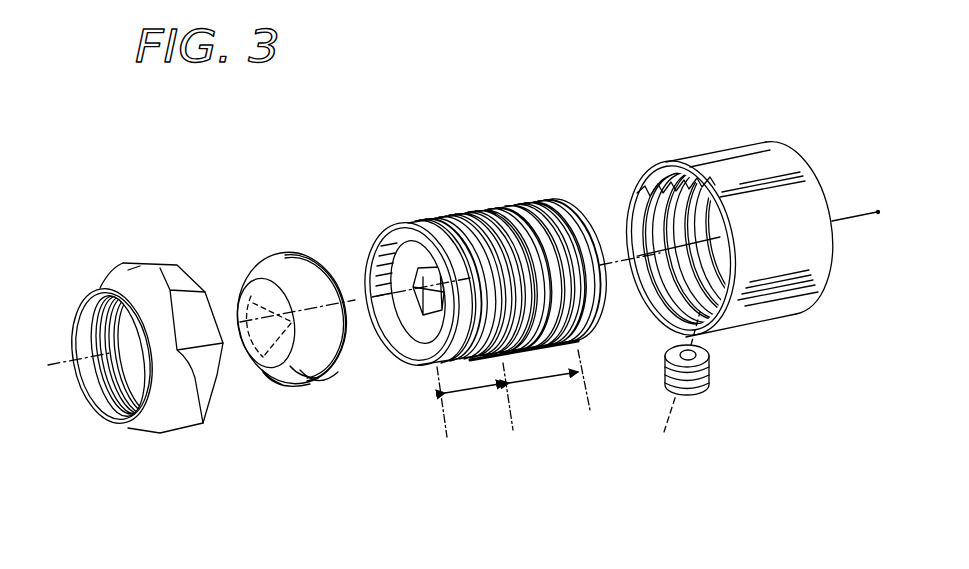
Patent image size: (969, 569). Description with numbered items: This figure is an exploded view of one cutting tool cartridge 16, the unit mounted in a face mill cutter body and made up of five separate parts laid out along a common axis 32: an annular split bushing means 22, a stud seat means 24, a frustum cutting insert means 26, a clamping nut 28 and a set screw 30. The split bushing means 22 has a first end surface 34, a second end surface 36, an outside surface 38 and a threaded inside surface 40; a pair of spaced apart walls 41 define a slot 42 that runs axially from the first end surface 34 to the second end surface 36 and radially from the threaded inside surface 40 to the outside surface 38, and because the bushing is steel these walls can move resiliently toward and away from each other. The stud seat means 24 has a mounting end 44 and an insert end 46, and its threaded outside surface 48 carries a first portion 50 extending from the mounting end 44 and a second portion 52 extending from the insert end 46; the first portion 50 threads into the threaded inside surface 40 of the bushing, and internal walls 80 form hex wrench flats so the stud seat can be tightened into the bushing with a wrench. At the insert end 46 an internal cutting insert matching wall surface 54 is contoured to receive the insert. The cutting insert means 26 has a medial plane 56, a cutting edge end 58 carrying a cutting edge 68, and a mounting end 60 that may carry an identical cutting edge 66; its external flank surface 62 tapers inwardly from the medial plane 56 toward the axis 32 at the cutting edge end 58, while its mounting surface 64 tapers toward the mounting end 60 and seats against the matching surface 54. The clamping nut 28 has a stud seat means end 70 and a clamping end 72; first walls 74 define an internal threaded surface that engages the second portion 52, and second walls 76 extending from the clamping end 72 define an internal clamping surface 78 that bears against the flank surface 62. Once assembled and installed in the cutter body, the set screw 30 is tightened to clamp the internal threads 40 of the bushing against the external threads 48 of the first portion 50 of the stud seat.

The cutting tool cartridge 16 is at (610, 72).
The annular split bushing means 22 is at (692, 148).
The stud seat means 24 is at (442, 196).
The frustum cutting insert means 26 is at (301, 254).
The clamping nut 28 is at (178, 257).
The set screw 30 is at (708, 379).
The predetermined axis 32 is at (855, 213).
The first end surface 34 is at (828, 270).
The second end surface 36 is at (686, 330).
The outside surface 38 is at (768, 225).
The threaded inside surface 40 is at (732, 277).
The internal thread of coupling 41 is at (640, 193).
The slot 42 is at (641, 280).
The mounting end 44 is at (600, 340).
The insert end 46 is at (418, 343).
The threaded outside surface 48 is at (517, 199).
The threaded first portion 50 is at (549, 380).
The second portion 52 is at (475, 400).
The internal cutting insert matching wall surface 54 is at (397, 338).
The medial plane 56 is at (300, 375).
The cutting edge end 58 is at (270, 352).
The mounting end 60 is at (303, 257).
The external flank surface 62 is at (273, 267).
The mounting surface 64 is at (340, 338).
The cutting edge 66 is at (336, 280).
The cutting edge 68 is at (235, 345).
The stud seat means end 70 is at (160, 262).
The clamping end 72 is at (125, 398).
The first walls 74 is at (145, 396).
The second walls 76 is at (103, 398).
The internal clamping surface 78 is at (92, 382).
The internal walls 80 is at (427, 347).